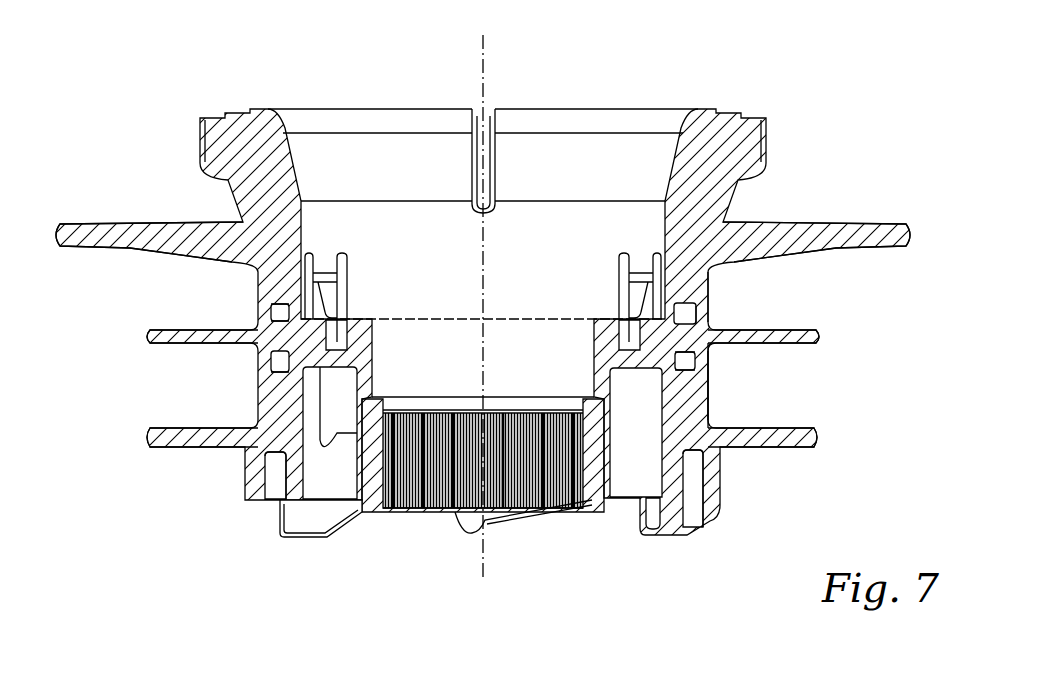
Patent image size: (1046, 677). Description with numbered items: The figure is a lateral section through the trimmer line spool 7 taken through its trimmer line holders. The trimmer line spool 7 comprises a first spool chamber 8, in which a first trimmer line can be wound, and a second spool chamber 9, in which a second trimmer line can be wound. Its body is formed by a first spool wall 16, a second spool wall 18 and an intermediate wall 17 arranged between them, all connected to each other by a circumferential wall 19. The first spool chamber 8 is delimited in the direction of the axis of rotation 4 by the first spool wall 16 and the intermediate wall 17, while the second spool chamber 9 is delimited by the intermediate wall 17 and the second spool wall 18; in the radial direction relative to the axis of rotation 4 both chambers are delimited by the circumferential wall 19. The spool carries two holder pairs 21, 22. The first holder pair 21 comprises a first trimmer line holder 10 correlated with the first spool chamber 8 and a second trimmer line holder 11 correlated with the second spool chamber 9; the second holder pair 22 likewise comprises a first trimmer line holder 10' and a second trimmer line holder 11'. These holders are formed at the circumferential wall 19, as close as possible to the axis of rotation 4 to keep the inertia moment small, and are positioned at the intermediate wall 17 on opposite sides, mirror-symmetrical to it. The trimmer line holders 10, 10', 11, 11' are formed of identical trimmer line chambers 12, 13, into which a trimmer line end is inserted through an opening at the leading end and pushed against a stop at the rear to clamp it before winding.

The axis of rotation 4 is at (486, 62).
The trimmer line spool 7 is at (160, 113).
The first spool chamber 8 is at (822, 307).
The second spool chamber 9 is at (816, 386).
The first trimmer line holder 10 is at (716, 295).
The first trimmer line holder 10' is at (253, 308).
The second trimmer line holder 11 is at (249, 367).
The second trimmer line holder 11' is at (723, 356).
The trimmer line chamber 12 is at (274, 380).
The trimmer line chamber 13 is at (268, 298).
The first spool wall 16 is at (867, 242).
The intermediate wall 17 is at (816, 342).
The second spool wall 18 is at (817, 448).
The circumferential wall 19 is at (708, 407).
The first holder pair 21 is at (282, 376).
The second holder pair 22 is at (283, 297).